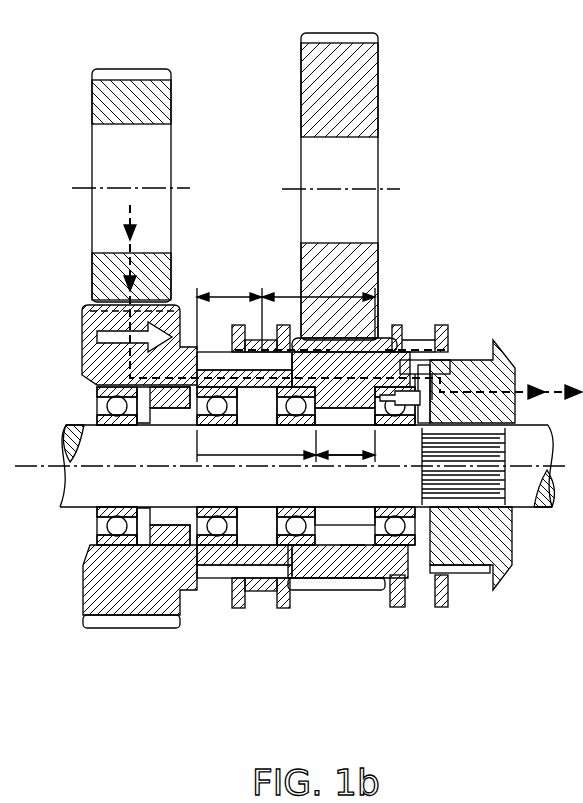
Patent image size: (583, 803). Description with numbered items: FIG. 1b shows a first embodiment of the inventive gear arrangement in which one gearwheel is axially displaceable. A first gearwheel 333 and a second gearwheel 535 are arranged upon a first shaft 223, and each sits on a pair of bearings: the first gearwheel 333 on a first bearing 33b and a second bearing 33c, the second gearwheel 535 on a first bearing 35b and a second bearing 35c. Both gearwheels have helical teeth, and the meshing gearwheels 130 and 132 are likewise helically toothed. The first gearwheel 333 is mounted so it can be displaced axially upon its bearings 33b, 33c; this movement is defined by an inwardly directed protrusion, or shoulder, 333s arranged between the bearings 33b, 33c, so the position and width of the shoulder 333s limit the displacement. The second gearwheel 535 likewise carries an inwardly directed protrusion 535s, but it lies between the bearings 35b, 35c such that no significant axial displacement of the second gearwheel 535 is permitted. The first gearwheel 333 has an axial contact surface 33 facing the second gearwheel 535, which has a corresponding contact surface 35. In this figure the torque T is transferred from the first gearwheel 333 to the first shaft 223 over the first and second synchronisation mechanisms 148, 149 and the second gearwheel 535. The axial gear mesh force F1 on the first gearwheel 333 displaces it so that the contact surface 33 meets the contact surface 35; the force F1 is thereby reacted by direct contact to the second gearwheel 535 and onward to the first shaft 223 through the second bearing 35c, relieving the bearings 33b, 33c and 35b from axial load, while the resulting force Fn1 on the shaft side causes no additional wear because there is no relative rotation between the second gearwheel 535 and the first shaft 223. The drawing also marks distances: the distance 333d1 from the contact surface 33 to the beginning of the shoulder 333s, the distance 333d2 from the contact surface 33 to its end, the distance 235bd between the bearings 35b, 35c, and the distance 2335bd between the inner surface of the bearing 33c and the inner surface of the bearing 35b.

The gearwheel 130 is at (118, 175).
The gearwheel 132 is at (353, 175).
The contact surface 33 is at (225, 560).
The first bearing 33b is at (97, 512).
The second bearing 33c is at (167, 540).
The first gearwheel 333 is at (88, 620).
The inwardly directed protrusion 333s is at (147, 540).
The first synchronisation mechanism 148 is at (284, 610).
The second synchronisation mechanism 149 is at (450, 592).
The contact surface 35 is at (303, 560).
The first bearing 35b is at (352, 550).
The second bearing 35c is at (410, 580).
The second gearwheel 535 is at (342, 590).
The inwardly directed protrusion 535s is at (373, 560).
The first shaft 223 is at (520, 500).
The torque load T is at (125, 238).
The axial gear mesh force F1 is at (100, 352).
The normal force Fn1 is at (447, 407).
The distance 333d1 is at (229, 311).
The distance 333d2 is at (318, 305).
The distance 2335bd is at (286, 446).
The distance 235bd is at (346, 458).